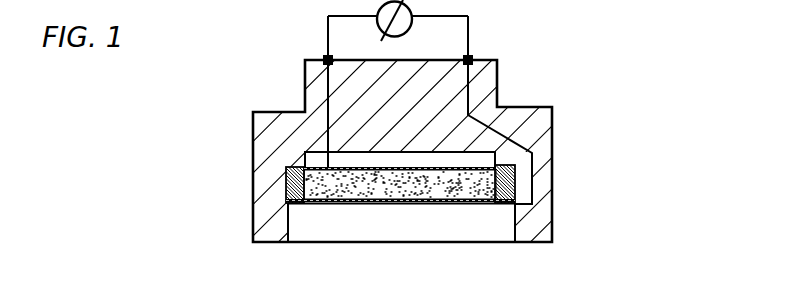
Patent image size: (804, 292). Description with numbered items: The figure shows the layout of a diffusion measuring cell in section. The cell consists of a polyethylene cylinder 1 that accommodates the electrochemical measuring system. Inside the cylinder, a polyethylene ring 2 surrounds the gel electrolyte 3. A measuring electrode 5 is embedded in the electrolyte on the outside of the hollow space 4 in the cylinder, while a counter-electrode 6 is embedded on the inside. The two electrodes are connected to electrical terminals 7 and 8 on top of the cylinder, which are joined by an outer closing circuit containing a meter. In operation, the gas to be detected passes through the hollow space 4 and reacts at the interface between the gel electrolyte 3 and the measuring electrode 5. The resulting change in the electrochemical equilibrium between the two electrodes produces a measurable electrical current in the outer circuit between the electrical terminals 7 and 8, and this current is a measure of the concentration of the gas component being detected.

The polyethylene cylinder 1 is at (312, 97).
The polyethylene ring 2 is at (286, 184).
The gel electrolyte 3 is at (353, 178).
The hollow space 4 is at (475, 223).
The measuring electrode 5 is at (394, 200).
The counter-electrode 6 is at (431, 170).
The electrical terminal 7 is at (326, 57).
The electrical terminal 8 is at (470, 56).